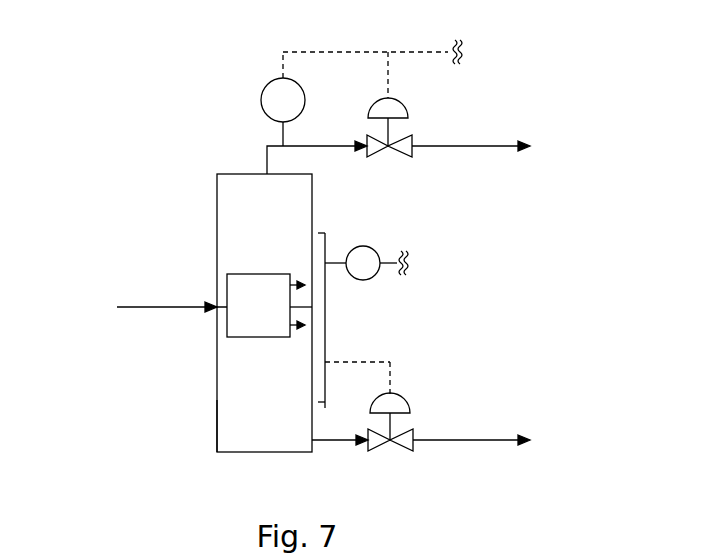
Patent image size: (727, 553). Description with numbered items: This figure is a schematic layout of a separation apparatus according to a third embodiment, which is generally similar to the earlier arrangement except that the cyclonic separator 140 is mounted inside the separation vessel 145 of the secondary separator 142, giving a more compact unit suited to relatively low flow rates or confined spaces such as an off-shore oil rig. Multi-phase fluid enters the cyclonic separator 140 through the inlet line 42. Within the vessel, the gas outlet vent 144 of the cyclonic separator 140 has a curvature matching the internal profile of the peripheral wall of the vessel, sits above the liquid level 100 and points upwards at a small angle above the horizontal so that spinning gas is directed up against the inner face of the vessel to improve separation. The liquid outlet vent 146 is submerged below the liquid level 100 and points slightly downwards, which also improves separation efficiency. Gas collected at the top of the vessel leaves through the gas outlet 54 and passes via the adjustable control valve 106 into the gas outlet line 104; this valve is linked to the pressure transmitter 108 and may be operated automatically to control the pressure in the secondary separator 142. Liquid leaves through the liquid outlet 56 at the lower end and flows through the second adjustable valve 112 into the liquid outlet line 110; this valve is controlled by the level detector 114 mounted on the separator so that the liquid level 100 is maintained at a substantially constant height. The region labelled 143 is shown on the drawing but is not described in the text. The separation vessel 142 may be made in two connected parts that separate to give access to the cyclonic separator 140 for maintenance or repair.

The inlet line 42 is at (157, 303).
The gas outlet 54 is at (260, 157).
The liquid outlet 56 is at (332, 443).
The liquid level 100 is at (307, 307).
The gas outlet line 104 is at (482, 147).
The adjustable control valve 106 is at (405, 108).
The pressure transmitter 108 is at (265, 90).
The liquid outlet line 110 is at (452, 435).
The second adjustable valve 112 is at (400, 395).
The level detector 114 is at (330, 245).
The cyclonic separator 140 is at (227, 333).
The secondary separator 142 is at (213, 220).
The separator interior 143 is at (225, 250).
The gas outlet vent 144 is at (300, 277).
The separation vessel 145 is at (215, 407).
The liquid outlet vent 146 is at (302, 330).